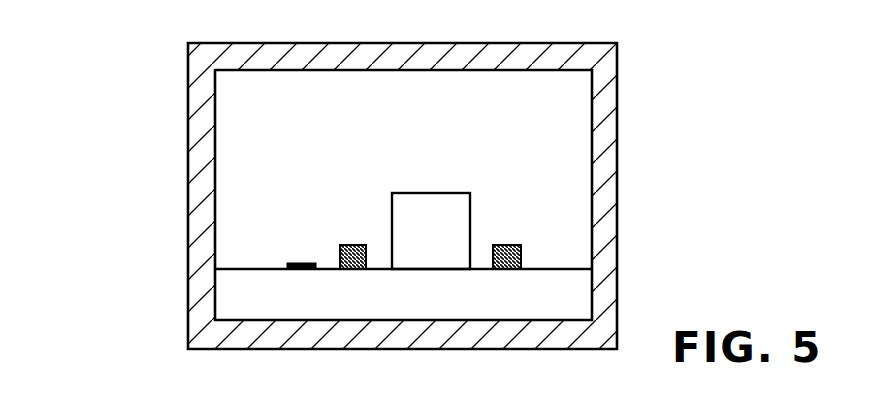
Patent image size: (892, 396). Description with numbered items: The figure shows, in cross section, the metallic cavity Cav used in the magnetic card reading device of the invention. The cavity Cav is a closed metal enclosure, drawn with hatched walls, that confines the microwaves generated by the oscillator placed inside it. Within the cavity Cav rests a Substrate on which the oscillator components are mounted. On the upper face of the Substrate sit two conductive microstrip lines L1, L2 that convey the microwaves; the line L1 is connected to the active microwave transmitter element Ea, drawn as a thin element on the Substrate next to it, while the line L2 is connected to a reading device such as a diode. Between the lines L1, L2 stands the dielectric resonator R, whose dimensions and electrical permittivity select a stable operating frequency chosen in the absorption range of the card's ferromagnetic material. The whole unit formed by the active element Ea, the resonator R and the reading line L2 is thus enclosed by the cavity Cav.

The metallic cavity Cav is at (495, 338).
The substrate Substrate is at (250, 300).
The dielectric resonator R is at (443, 230).
The first microstrip line L1 is at (335, 253).
The second microstrip line L2 is at (526, 256).
The active microwave transmitter element Ea is at (285, 264).